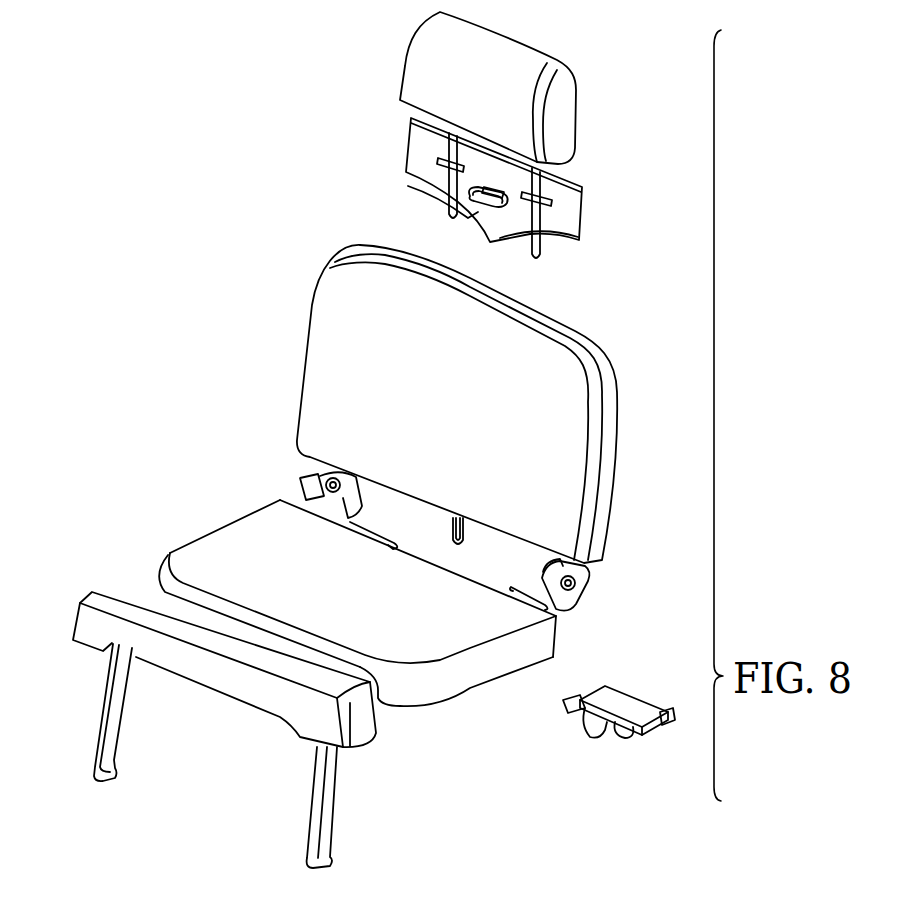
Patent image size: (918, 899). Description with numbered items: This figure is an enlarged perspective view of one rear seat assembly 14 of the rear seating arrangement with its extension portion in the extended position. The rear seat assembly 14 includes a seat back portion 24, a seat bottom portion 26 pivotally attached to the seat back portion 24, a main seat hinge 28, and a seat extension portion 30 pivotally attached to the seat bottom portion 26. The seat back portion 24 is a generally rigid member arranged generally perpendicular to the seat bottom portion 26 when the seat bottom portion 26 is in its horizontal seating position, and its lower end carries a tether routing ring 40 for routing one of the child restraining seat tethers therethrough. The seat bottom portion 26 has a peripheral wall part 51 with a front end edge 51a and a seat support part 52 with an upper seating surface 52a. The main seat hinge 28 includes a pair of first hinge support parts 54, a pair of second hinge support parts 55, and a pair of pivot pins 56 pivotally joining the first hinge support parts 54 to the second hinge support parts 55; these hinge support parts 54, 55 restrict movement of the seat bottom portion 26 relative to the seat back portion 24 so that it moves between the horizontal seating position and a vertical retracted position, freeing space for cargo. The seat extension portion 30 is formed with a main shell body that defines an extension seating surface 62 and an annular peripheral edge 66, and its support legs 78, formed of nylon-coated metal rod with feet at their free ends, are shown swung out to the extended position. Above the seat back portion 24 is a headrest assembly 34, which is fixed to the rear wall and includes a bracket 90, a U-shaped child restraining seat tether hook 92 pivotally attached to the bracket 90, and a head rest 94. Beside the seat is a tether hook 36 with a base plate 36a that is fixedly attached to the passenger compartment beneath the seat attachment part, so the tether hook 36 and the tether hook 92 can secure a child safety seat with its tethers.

The rear seat assembly 14 is at (652, 357).
The seat back portion 24 is at (585, 452).
The seat bottom portion 26 is at (246, 508).
The main seat hinge 28 is at (642, 598).
The seat extension portion 30 is at (247, 717).
The headrest assembly 34 is at (626, 166).
The tether hook 36 is at (656, 726).
The base plate 36a is at (626, 700).
The tether routing ring 40 is at (443, 547).
The peripheral wall part 51 is at (481, 678).
The front end edge 51a is at (396, 688).
The seat support part 52 is at (178, 549).
The upper seating surface 52a is at (246, 546).
The first hinge support parts 54 is at (346, 489).
The second hinge support parts 55 is at (303, 490).
The pivot pins 56 is at (304, 479).
The extension seating surface 62 is at (137, 600).
The annular peripheral edge 66 is at (366, 719).
The support legs 78 is at (119, 739).
The bracket 90 is at (565, 219).
The child restraining seat tether hook 92 is at (488, 208).
The head rest 94 is at (560, 106).